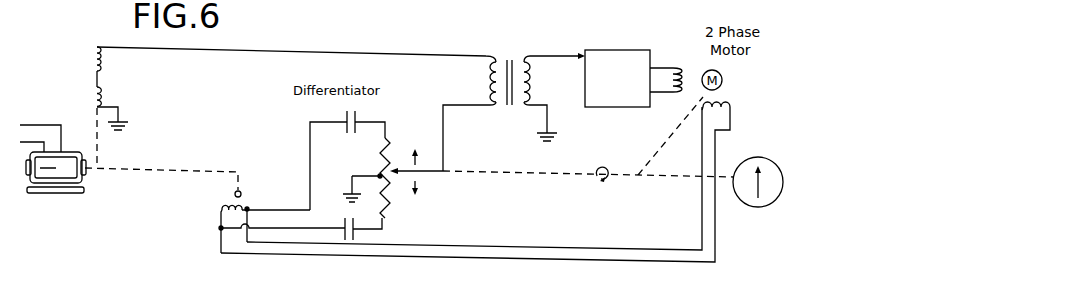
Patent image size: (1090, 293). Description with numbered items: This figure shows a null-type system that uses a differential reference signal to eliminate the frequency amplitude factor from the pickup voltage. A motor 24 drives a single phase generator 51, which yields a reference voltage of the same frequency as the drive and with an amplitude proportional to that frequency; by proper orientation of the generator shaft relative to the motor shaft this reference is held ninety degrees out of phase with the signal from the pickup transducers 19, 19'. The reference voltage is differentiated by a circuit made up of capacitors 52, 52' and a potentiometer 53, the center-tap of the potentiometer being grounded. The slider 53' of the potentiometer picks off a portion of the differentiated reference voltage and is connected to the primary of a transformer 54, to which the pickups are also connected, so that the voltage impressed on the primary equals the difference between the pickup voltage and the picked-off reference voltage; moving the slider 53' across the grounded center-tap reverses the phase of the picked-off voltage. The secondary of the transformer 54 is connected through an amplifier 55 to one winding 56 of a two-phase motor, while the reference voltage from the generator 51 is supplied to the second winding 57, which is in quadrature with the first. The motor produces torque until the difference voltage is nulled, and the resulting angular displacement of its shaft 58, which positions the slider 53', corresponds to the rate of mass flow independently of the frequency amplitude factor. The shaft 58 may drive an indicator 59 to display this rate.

The pickup transducer 19' is at (125, 62).
The pickup transducer 19 is at (123, 107).
The motor 24 is at (70, 158).
The single phase generator 51 is at (226, 207).
The capacitor 52 is at (338, 137).
The capacitor 52' is at (347, 218).
The potentiometer 53 is at (380, 169).
The slider 53' is at (422, 177).
The transformer 54 is at (516, 132).
The amplifier 55 is at (622, 60).
The winding 56 is at (685, 66).
The second winding 57 is at (722, 96).
The shaft 58 is at (668, 129).
The indicator 59 is at (773, 202).